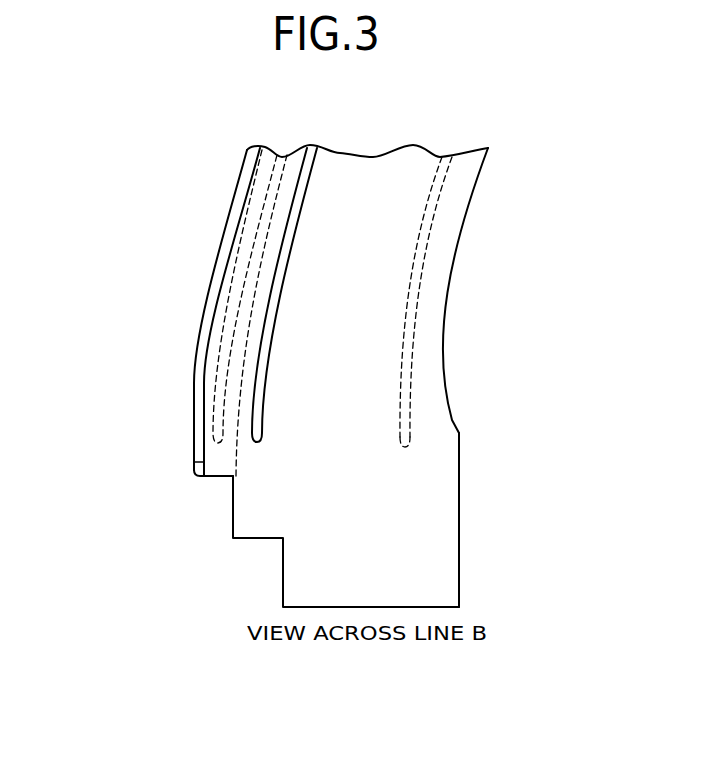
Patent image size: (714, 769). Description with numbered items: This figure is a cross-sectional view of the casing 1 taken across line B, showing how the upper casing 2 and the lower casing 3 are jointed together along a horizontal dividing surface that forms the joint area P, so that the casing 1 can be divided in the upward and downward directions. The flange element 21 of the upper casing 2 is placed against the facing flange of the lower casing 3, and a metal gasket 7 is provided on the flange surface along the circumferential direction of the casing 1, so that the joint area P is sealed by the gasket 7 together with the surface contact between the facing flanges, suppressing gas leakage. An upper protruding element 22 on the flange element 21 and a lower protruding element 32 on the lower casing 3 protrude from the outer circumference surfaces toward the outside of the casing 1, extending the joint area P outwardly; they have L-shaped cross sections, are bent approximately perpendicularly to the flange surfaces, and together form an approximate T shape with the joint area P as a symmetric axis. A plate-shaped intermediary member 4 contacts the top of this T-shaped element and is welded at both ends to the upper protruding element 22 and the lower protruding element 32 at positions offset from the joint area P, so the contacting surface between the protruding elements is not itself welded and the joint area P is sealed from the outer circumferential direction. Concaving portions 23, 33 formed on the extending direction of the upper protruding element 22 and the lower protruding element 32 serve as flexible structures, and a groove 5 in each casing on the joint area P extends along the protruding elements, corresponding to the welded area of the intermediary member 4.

The casing 1 is at (487, 146).
The upper casing 2 is at (504, 290).
The lower casing 3 is at (448, 263).
The intermediary member 4 is at (198, 383).
The groove 5 is at (272, 283).
The metal gasket 7 is at (408, 352).
The flange element 21 is at (514, 509).
The upper protruding element 22 is at (222, 349).
The lower protruding element 32 is at (222, 480).
The concaving portion 23 is at (184, 296).
The concaving portion 33 is at (210, 422).
The joint area P is at (402, 527).